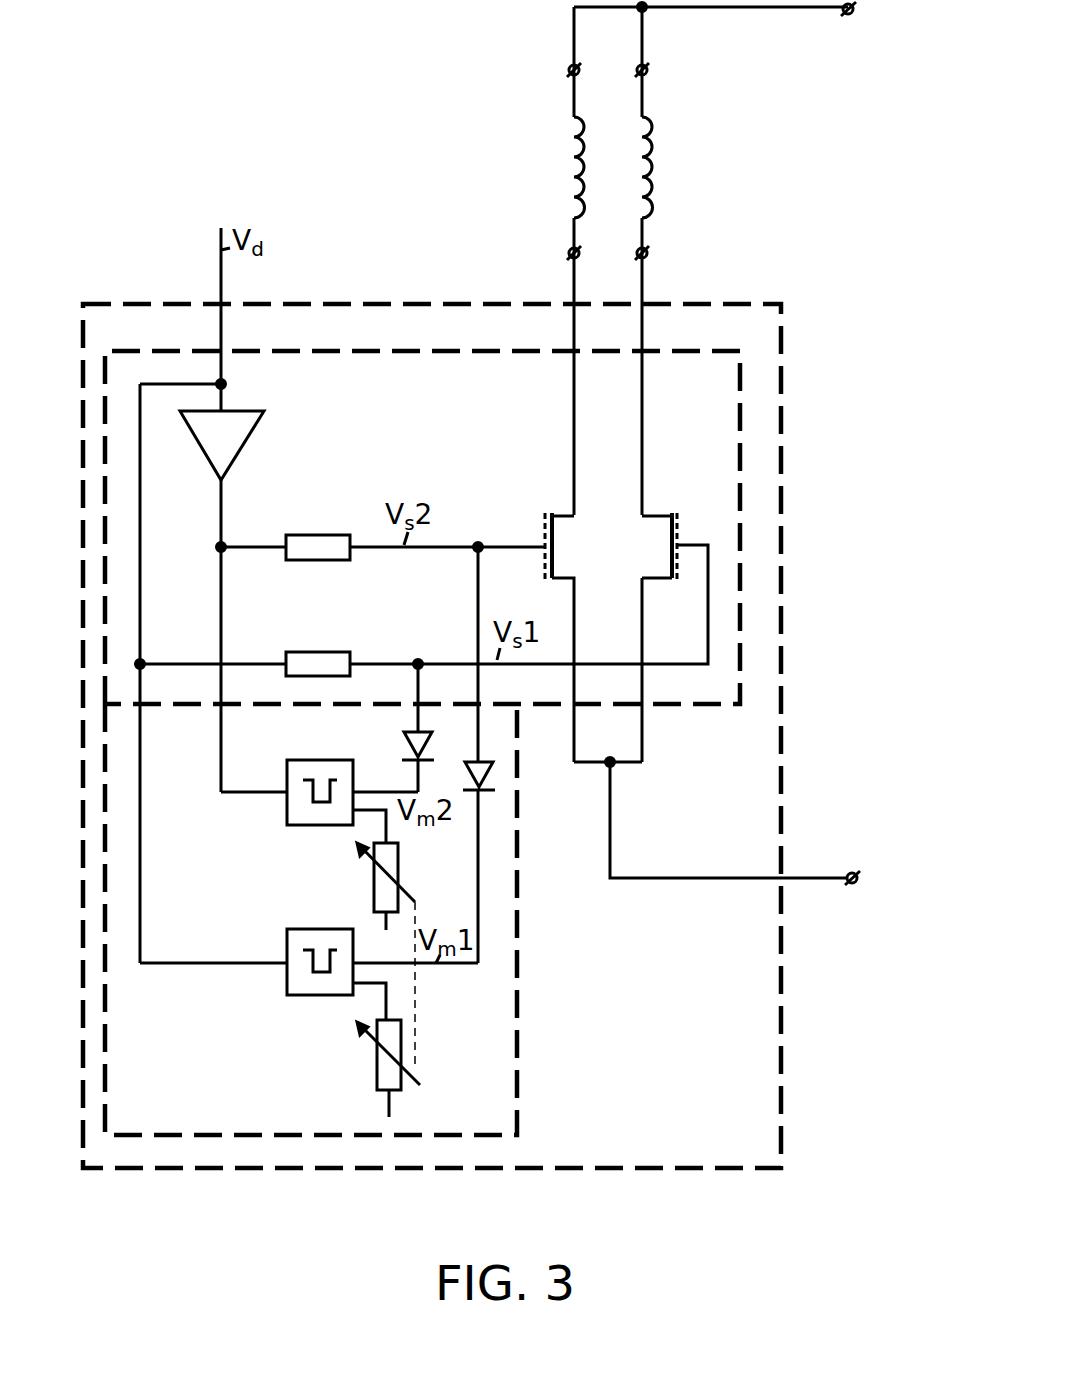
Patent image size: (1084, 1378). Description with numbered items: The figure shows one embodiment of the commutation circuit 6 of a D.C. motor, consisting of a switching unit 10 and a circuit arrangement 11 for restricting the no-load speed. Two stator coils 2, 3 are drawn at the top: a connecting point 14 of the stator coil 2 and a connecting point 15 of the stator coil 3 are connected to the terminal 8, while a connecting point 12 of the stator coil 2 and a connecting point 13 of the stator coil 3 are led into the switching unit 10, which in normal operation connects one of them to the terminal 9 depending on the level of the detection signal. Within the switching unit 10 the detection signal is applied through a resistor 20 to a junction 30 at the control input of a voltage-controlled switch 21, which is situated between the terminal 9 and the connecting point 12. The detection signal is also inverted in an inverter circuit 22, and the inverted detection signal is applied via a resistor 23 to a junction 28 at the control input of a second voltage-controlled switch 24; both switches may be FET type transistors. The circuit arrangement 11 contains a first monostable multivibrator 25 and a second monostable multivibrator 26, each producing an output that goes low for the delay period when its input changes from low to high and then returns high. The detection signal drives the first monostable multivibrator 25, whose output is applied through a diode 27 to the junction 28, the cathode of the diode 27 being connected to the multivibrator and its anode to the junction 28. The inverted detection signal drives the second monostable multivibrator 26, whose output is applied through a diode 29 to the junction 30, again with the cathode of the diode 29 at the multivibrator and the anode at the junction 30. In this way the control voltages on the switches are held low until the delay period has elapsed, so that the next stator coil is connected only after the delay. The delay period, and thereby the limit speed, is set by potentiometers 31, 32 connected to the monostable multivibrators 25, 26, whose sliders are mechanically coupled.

The stator coil 2 is at (570, 153).
The stator coil 3 is at (650, 167).
The commutation circuit 6 is at (429, 302).
The terminal 8 is at (728, 13).
The terminal 9 is at (729, 829).
The switching unit 10 is at (335, 352).
The circuit arrangement 11 is at (519, 1090).
The connecting point 12 is at (568, 253).
The connecting point 13 is at (648, 253).
The connecting point 14 is at (568, 70).
The connecting point 15 is at (648, 70).
The resistor 20 is at (312, 656).
The voltage-controlled switch 21 is at (670, 536).
The inverter circuit 22 is at (252, 428).
The resistor 23 is at (306, 536).
The voltage-controlled switch 24 is at (556, 545).
The first monostable multivibrator 25 is at (318, 930).
The second monostable multivibrator 26 is at (306, 832).
The diode 27 is at (472, 764).
The junction 28 is at (480, 540).
The diode 29 is at (402, 740).
The junction 30 is at (418, 674).
The potentiometer 31 is at (400, 866).
The potentiometer 32 is at (402, 1040).